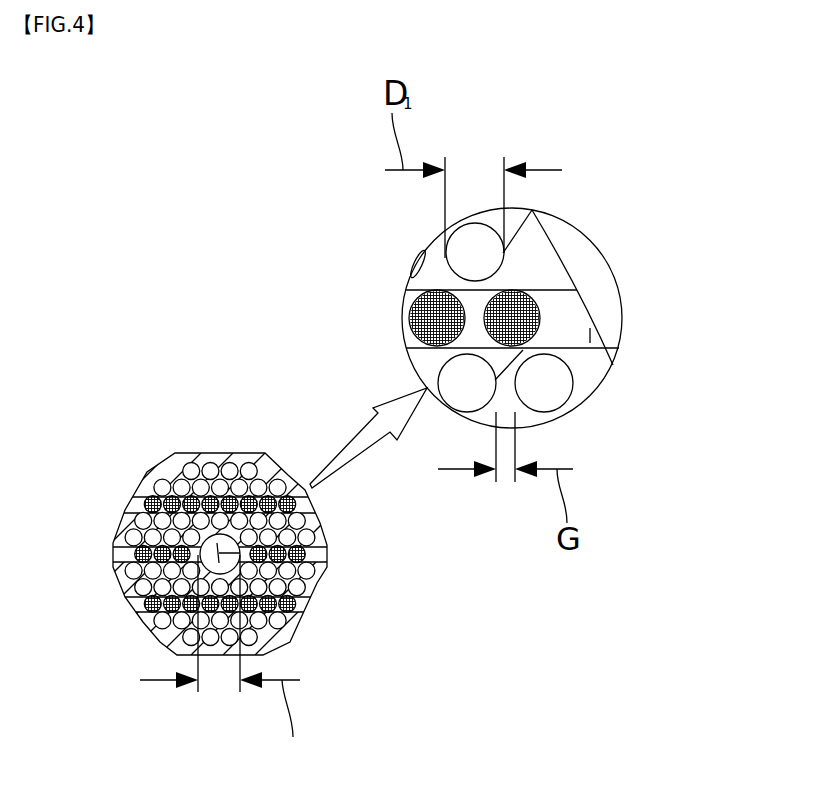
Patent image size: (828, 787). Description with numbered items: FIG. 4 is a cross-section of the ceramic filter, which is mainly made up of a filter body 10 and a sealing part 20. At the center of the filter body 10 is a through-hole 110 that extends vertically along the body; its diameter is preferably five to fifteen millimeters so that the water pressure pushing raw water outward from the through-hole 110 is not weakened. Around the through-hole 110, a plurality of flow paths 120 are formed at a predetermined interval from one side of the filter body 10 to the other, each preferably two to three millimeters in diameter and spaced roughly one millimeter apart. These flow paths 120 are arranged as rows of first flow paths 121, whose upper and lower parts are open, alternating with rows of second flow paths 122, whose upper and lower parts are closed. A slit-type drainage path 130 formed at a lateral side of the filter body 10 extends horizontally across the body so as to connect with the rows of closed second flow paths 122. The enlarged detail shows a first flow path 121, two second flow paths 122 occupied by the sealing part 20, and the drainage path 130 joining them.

The filter body 10 is at (244, 575).
The sealing part 20 is at (436, 320).
The through-hole 110 is at (328, 573).
The flow paths 120 is at (510, 274).
The first flow paths 121 is at (533, 252).
The second flow paths 122 is at (573, 318).
The drainage path 130 is at (590, 336).